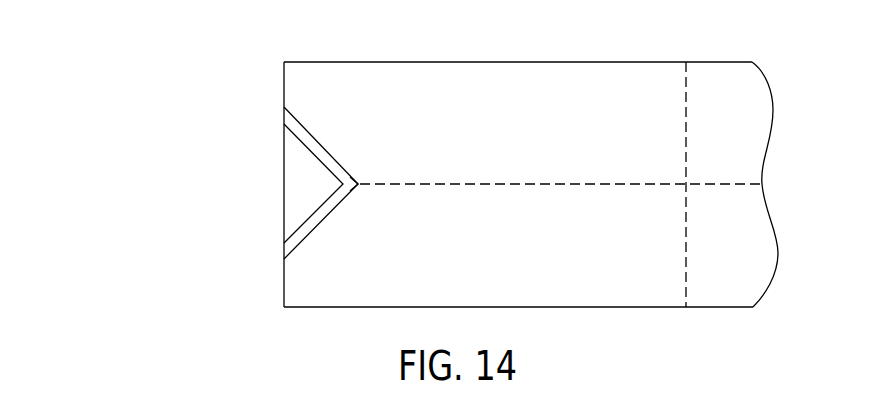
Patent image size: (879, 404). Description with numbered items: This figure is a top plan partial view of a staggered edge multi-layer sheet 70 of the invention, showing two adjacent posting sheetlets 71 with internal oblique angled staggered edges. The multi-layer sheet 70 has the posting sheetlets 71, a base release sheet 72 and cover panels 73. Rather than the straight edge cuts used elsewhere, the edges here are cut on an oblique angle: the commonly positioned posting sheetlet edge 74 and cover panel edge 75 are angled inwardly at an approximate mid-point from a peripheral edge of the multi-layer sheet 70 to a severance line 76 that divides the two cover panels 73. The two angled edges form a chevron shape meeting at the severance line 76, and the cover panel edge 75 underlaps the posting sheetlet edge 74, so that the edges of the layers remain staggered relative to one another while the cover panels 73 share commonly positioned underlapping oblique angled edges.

The multi-layer sheet 70 is at (184, 153).
The posting sheetlets 71 is at (297, 133).
The base release sheet 72 is at (292, 195).
The cover panels 73 is at (517, 131).
The posting sheetlet edge 74 is at (313, 150).
The cover panel edge 75 is at (348, 172).
The severance line 76 is at (670, 184).